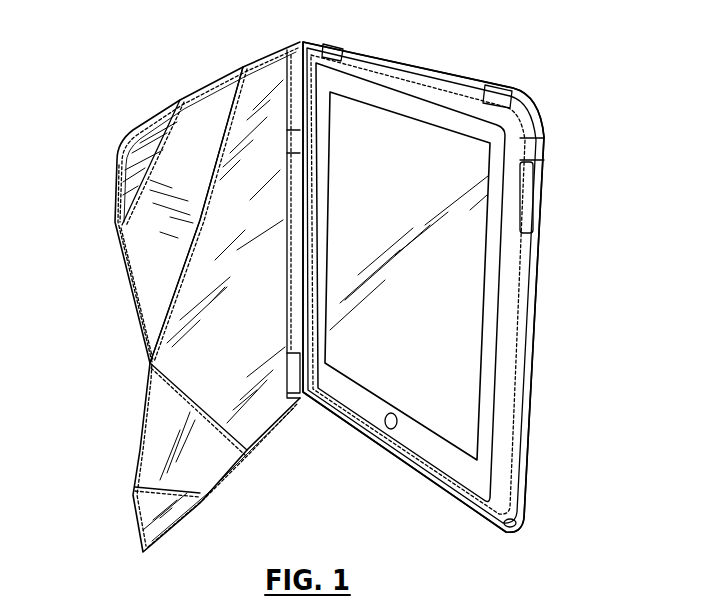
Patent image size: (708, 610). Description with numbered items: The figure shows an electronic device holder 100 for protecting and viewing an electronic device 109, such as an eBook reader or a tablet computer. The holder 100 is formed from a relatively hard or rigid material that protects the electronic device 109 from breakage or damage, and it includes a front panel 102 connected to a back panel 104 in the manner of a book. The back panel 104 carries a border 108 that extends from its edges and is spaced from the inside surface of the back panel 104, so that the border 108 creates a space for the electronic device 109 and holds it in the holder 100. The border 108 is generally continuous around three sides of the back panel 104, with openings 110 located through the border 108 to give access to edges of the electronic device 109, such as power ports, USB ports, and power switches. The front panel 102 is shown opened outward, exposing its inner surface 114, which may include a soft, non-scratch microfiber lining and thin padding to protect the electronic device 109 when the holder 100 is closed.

The electronic device holder 100 is at (445, 62).
The front panel 102 is at (183, 363).
The back panel 104 is at (548, 152).
The border 108 is at (518, 292).
The electronic device 109 is at (422, 347).
The openings 110 is at (523, 198).
The inner surface of front panel 114 is at (200, 265).